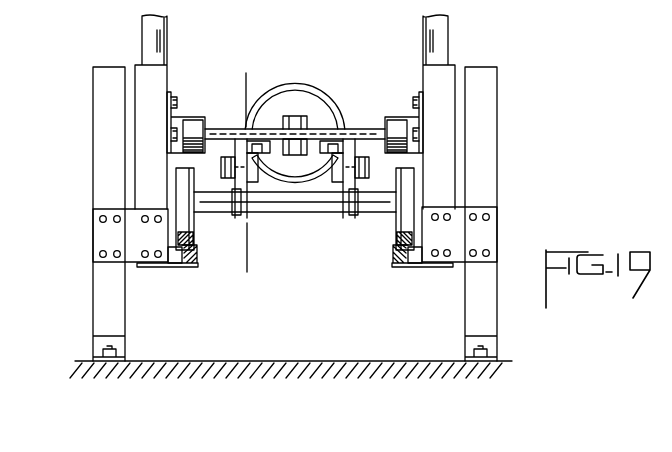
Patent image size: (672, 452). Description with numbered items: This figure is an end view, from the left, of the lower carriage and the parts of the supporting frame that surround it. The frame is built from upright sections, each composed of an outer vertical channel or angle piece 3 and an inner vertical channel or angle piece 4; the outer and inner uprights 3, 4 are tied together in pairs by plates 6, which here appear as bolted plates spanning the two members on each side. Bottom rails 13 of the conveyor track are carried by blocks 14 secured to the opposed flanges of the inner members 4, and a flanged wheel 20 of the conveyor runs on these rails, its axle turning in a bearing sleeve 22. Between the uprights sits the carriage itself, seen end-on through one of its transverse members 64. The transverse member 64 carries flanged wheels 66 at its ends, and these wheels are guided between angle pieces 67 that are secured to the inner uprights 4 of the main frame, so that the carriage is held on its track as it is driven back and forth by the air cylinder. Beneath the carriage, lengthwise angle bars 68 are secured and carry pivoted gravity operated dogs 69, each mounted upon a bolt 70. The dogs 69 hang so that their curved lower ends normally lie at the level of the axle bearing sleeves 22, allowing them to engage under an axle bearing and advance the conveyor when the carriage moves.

The outer vertical channel 3 is at (102, 85).
The inner vertical channel 4 is at (150, 85).
The plate 6 is at (137, 233).
The bottom rail 13 is at (187, 263).
The block 14 is at (177, 263).
The flanged wheel 20 is at (242, 176).
The sleeve 22 is at (333, 208).
The transverse member 64 is at (362, 129).
The flanged wheel 66 is at (189, 130).
The angle piece 67 is at (421, 142).
The lengthwise angle bar 68 is at (318, 186).
The gravity operated dog 69 is at (239, 208).
The bolt 70 is at (222, 166).